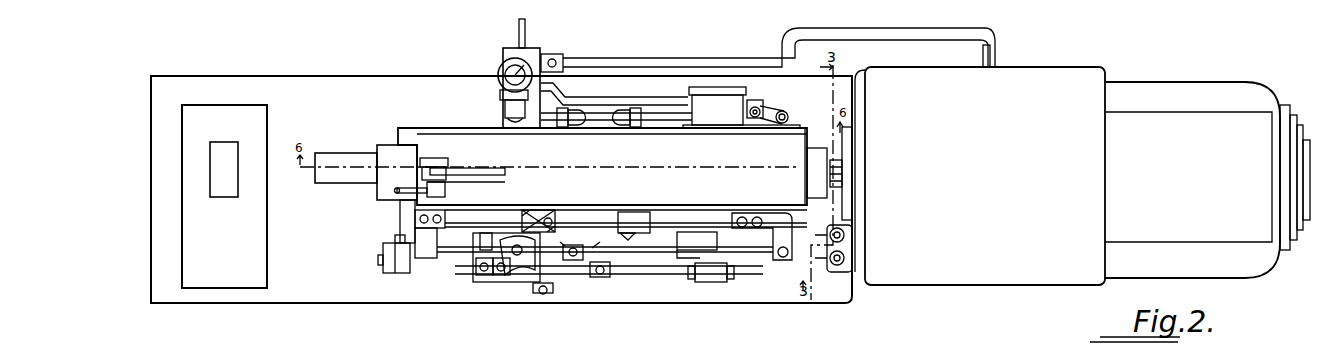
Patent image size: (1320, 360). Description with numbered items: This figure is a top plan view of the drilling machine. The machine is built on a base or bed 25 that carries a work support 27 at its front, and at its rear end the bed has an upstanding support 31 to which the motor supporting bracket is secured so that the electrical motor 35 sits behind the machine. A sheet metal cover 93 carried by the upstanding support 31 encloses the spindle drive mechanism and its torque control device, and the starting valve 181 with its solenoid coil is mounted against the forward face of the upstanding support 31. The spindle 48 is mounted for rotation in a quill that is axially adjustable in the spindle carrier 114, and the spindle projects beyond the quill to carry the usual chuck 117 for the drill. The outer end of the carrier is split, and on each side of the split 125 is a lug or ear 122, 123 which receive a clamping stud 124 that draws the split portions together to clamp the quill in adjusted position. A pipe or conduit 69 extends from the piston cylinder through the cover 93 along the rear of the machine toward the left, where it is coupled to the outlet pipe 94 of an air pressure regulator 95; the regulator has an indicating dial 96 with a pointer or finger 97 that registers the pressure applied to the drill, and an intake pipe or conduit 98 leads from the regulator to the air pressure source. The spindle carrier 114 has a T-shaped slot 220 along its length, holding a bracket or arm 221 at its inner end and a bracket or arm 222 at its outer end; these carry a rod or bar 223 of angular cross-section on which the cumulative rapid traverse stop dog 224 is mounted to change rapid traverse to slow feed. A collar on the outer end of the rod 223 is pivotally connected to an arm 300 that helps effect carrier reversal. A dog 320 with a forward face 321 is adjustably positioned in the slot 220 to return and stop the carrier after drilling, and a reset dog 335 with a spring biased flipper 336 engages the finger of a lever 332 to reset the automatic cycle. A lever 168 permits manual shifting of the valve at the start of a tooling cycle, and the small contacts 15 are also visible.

The base or bed 25 is at (312, 292).
The work support 27 is at (230, 282).
The chuck 117 is at (360, 152).
The spindle carrier 114 is at (765, 162).
The lug or ear 122 is at (452, 152).
The clamping stud 124 is at (441, 175).
The lug or ear 123 is at (440, 190).
The split 125 is at (503, 182).
The air pressure regulator 95 is at (493, 47).
The indicating dial 96 is at (500, 68).
The indicating pointer or finger 97 is at (498, 72).
The outlet pipe 94 is at (553, 58).
The pipe or conduit 69 is at (994, 57).
The intake pipe or conduit 98 is at (645, 98).
The spindle 48 is at (840, 168).
The upstanding support 31 is at (858, 206).
The sheet metal cover 93 is at (1086, 72).
The electrical motor 35 is at (1200, 85).
The starting valve 181 is at (846, 282).
The arm 300 is at (405, 273).
The bracket or arm 222 is at (425, 250).
The T-shaped slot 220 is at (705, 218).
The lever 332 is at (512, 283).
The lever 168 is at (541, 296).
The reset dog 335 is at (537, 210).
The flipper 336 is at (585, 203).
The cumulative rapid traverse stop dog 224 is at (578, 245).
The contact 15 is at (583, 240).
The rod or bar 223 is at (765, 255).
The forward face 321 is at (605, 212).
The dog 320 is at (648, 212).
The bracket or arm 221 is at (782, 215).